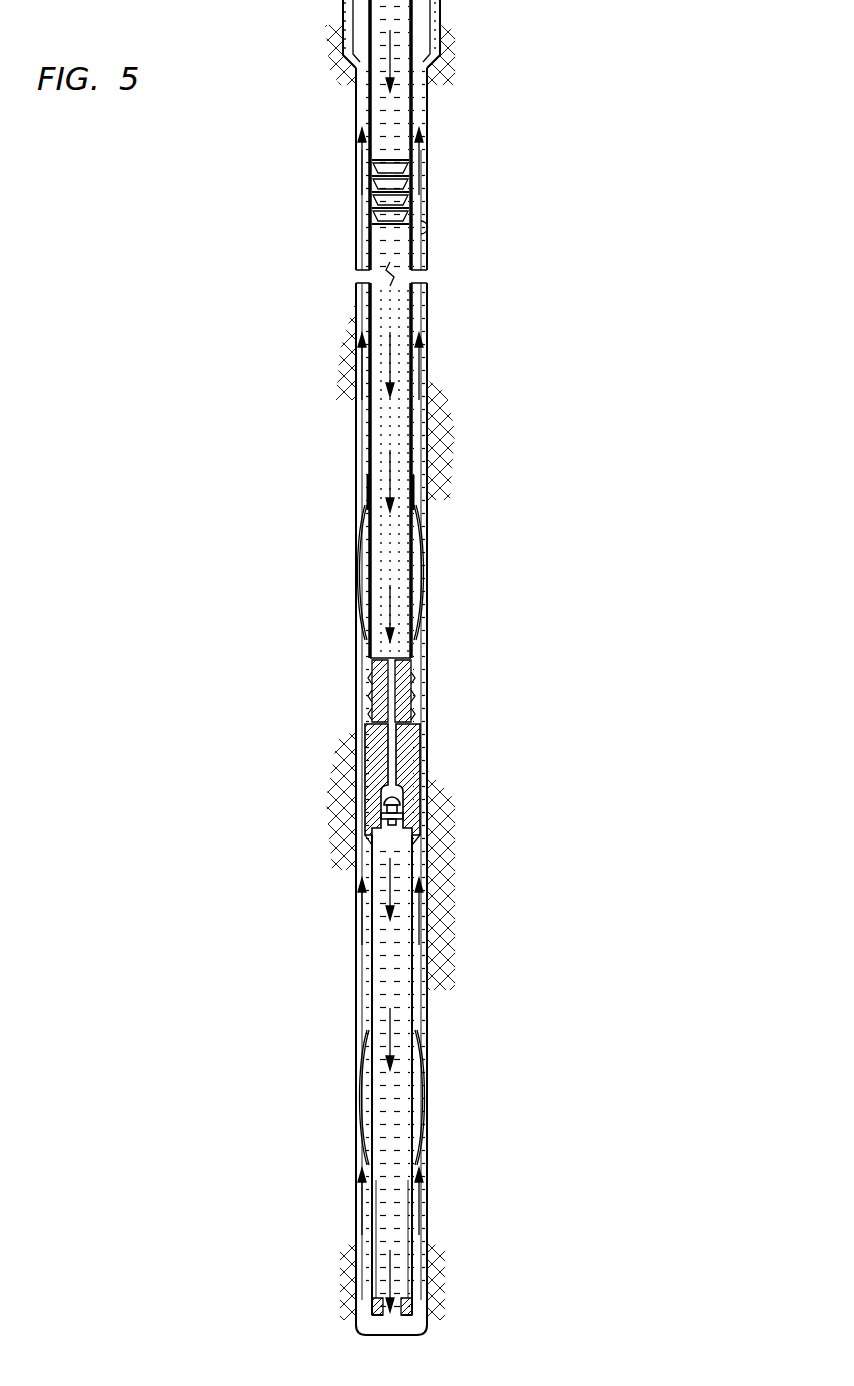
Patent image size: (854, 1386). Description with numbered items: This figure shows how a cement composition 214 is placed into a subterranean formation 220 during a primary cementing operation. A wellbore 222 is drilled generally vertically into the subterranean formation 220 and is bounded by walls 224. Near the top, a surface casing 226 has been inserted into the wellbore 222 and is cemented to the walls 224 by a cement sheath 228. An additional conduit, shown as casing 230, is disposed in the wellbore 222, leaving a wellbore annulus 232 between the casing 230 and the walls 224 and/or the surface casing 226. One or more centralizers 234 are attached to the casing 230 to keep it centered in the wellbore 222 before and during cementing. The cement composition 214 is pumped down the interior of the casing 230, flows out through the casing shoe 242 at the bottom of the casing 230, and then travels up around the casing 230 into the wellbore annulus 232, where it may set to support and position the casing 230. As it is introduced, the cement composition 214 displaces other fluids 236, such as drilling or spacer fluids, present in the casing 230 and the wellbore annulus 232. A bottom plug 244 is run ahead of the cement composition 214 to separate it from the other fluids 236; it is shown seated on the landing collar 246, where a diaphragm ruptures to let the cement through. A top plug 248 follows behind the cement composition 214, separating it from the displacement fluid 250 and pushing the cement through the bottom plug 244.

The cement composition 214 is at (392, 355).
The subterranean formation 220 is at (551, 671).
The wellbore 222 is at (434, 498).
The walls 224 is at (427, 232).
The surface casing 226 is at (440, 8).
The cement sheath 228 is at (441, 34).
The casing 230 is at (426, 386).
The wellbore annulus 232 is at (362, 478).
The centralizers 234 is at (362, 1060).
The other fluids 236 is at (392, 868).
The casing shoe 242 is at (362, 1258).
The bottom plug 244 is at (360, 677).
The landing collar 246 is at (365, 752).
The top plug 248 is at (370, 212).
The displacement fluid 250 is at (432, 60).